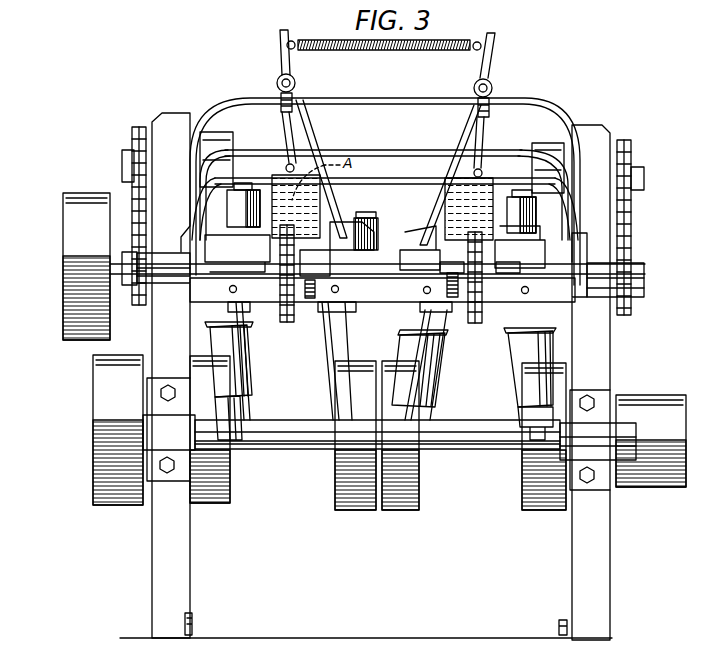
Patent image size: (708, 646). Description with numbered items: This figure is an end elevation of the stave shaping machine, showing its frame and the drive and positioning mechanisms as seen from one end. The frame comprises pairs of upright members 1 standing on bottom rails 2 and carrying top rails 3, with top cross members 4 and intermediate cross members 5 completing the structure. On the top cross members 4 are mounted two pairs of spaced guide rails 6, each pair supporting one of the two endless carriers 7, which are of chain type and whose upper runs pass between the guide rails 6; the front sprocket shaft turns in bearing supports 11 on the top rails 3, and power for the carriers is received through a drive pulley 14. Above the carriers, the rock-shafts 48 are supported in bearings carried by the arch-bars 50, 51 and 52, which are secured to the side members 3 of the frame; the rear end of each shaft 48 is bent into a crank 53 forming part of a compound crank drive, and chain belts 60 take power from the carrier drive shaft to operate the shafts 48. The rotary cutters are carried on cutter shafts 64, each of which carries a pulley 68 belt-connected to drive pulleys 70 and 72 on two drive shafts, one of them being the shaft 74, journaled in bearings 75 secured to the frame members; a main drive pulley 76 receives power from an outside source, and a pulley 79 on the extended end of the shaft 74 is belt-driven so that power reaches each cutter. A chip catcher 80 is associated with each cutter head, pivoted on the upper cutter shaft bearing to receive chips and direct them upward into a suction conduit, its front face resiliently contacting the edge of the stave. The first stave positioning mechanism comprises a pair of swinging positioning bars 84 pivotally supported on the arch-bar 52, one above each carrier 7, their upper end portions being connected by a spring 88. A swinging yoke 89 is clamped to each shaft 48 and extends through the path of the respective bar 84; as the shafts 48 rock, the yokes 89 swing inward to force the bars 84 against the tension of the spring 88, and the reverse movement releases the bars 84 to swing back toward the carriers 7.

The upright members 1 is at (182, 562).
The bottom rails 2 is at (193, 631).
The top rails 3 is at (205, 268).
The top cross members 4 is at (255, 298).
The intermediate cross members 5 is at (462, 452).
The guide rails 6 is at (462, 274).
The endless carriers 7 is at (287, 322).
The bearing supports 11 is at (600, 292).
The drive pulley 14 is at (66, 223).
The shafts 48 is at (277, 92).
The arch-bar 50 is at (391, 178).
The arch-bar 51 is at (399, 150).
The arch-bar 52 is at (409, 101).
The crank 53 is at (250, 160).
The chain belts 60 is at (633, 230).
The cutter shafts 64 is at (247, 397).
The pulley 68 is at (236, 372).
The drive pulleys 70 is at (215, 502).
The drive pulleys 72 is at (394, 510).
The shaft 74 is at (277, 442).
The bearings 75 is at (615, 442).
The main drive pulley 76 is at (640, 398).
The pulley 79 is at (108, 500).
The chip catcher 80 is at (366, 224).
The swinging positioning bars 84 is at (300, 112).
The spring 88 is at (372, 50).
The swinging yoke 89 is at (300, 125).